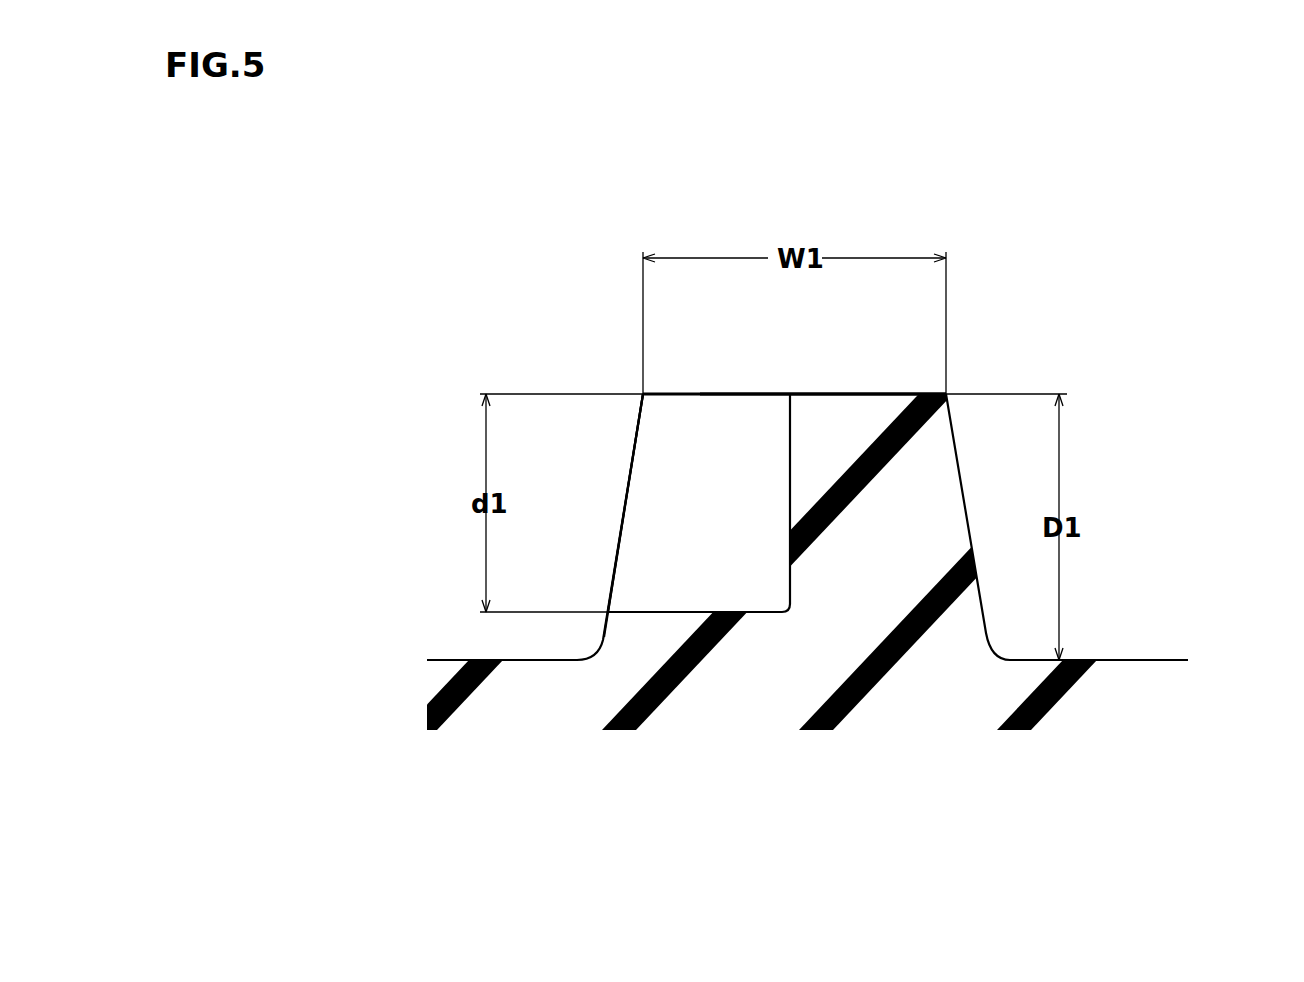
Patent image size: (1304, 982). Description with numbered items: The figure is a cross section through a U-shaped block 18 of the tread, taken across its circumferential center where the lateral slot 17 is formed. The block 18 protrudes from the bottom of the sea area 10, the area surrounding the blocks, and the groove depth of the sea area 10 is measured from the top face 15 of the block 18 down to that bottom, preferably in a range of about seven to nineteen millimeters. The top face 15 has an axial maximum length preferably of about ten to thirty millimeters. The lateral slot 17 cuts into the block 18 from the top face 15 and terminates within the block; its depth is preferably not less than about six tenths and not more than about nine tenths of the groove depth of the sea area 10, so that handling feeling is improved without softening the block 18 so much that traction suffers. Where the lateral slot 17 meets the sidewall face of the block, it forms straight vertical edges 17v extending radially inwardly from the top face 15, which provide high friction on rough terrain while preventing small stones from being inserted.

The sea area 10 is at (1118, 660).
The top face 15 is at (867, 394).
The lateral slot 17 is at (688, 445).
The vertical edges 17v is at (627, 487).
The U-shaped block 18 is at (967, 367).